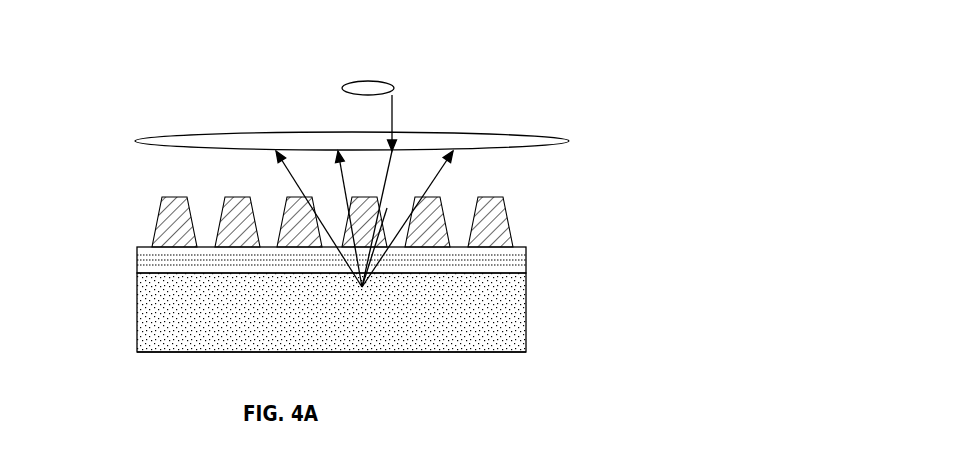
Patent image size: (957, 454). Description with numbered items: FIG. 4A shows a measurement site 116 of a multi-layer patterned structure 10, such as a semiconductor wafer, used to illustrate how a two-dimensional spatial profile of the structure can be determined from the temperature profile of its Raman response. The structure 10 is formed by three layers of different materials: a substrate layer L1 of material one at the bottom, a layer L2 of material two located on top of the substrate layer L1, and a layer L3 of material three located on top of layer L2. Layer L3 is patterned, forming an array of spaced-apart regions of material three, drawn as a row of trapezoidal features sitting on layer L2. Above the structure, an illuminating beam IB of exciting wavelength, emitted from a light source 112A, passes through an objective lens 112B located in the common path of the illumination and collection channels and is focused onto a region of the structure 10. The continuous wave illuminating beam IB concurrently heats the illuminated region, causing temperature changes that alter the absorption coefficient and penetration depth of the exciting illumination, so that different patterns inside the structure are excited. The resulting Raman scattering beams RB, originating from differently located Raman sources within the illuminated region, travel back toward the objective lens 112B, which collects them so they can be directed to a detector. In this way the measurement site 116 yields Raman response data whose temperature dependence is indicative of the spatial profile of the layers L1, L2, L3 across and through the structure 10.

The patterned structure 10 is at (98, 227).
The radiation source 112A is at (394, 82).
The objective lens 112B is at (460, 132).
The measurement site 116 is at (500, 347).
The illuminating beam IB is at (387, 208).
The Raman scattering beam RB is at (340, 173).
The substrate layer L1 is at (500, 312).
The second layer L2 is at (545, 263).
The patterned top layer L3 is at (507, 220).